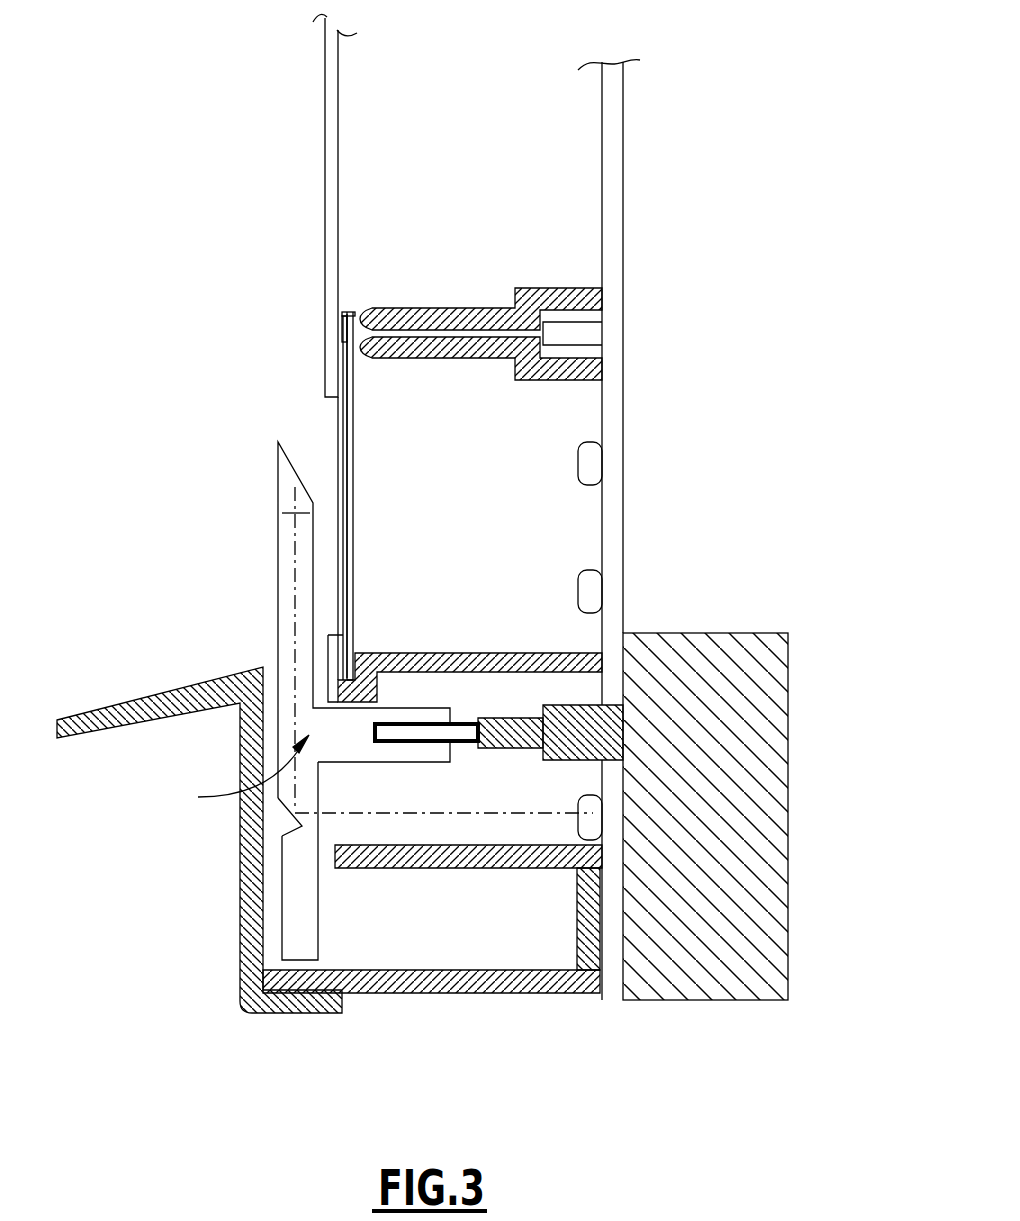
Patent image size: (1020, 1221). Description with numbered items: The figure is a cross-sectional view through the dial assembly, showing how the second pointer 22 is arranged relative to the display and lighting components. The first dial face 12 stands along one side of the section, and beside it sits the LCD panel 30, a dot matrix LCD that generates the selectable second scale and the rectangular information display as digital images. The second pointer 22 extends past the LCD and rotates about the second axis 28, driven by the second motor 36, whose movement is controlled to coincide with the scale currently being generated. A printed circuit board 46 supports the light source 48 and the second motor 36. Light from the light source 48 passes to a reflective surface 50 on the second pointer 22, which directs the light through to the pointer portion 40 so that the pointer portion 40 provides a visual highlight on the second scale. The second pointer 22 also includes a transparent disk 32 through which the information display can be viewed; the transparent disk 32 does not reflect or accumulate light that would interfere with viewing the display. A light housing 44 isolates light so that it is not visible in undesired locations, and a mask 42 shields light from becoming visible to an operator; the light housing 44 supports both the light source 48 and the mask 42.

The first dial face 12 is at (323, 117).
The LCD panel LCD is at (343, 430).
The LCD panel 30 is at (343, 468).
The pointer portion 40 is at (292, 484).
The second pointer 22 is at (278, 606).
The second axis 28 is at (232, 776).
The mask 42 is at (258, 947).
The light housing 44 is at (430, 985).
The transparent disk 32 is at (300, 938).
The reflective surface 50 is at (293, 817).
The printed circuit board 46 is at (613, 418).
The light source 48 is at (598, 816).
The second motor 36 is at (765, 682).